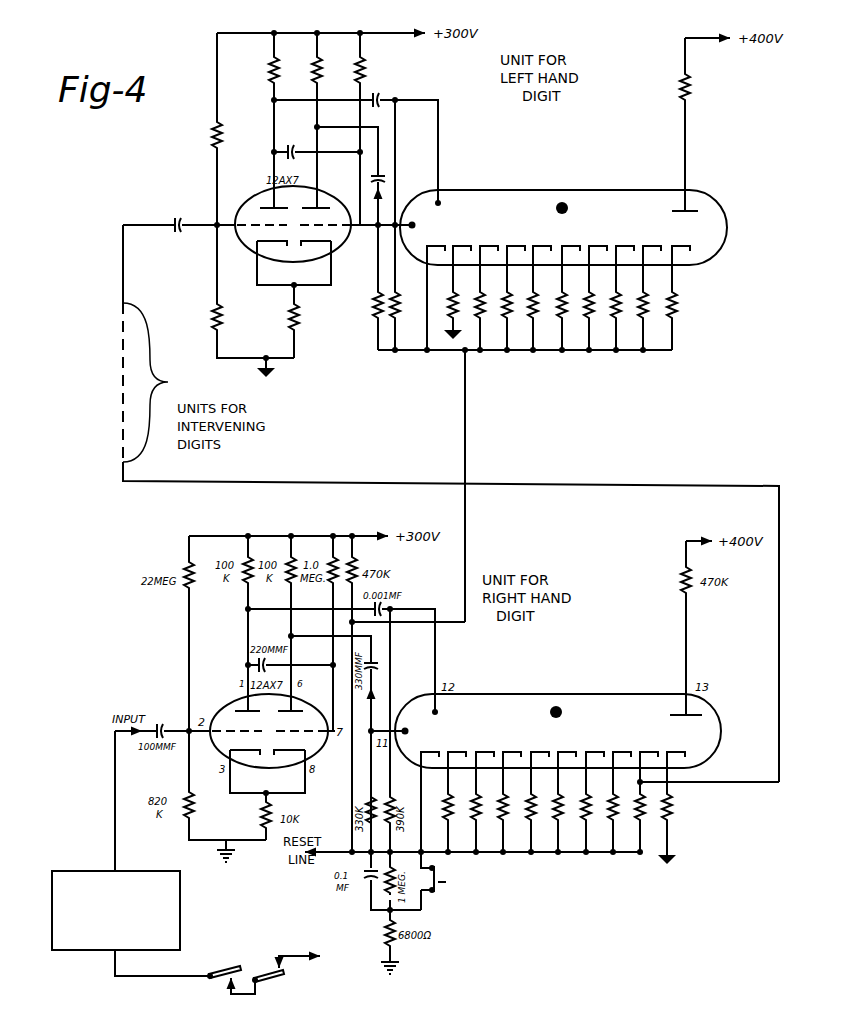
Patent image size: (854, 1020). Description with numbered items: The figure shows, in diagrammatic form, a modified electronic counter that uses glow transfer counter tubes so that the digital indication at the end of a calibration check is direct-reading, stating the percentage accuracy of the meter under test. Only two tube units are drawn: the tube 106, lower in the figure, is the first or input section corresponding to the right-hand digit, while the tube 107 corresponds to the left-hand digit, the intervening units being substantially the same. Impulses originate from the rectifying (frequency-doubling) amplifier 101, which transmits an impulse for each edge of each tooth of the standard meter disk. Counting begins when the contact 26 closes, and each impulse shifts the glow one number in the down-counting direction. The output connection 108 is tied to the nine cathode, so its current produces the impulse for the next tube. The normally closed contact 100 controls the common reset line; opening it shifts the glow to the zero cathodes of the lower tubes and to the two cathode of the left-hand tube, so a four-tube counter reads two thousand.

The contact 26 is at (222, 973).
The contact 100 is at (437, 893).
The rectifying (frequency-doubling) amplifier 101 is at (82, 871).
The tube 106 is at (636, 695).
The tube 107 is at (594, 191).
The output connection 108 is at (770, 785).